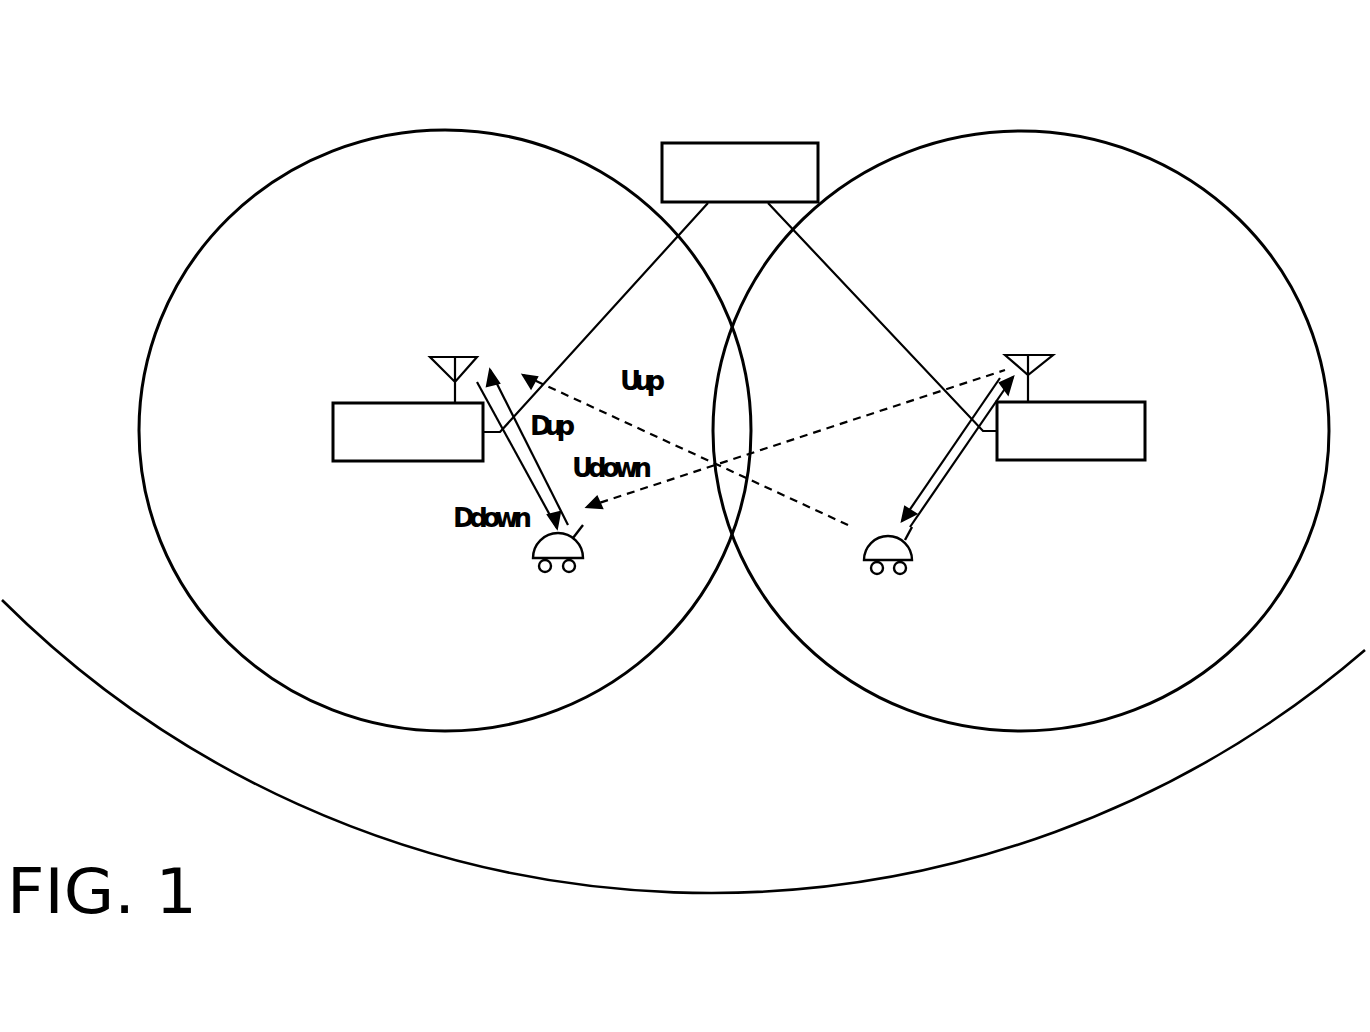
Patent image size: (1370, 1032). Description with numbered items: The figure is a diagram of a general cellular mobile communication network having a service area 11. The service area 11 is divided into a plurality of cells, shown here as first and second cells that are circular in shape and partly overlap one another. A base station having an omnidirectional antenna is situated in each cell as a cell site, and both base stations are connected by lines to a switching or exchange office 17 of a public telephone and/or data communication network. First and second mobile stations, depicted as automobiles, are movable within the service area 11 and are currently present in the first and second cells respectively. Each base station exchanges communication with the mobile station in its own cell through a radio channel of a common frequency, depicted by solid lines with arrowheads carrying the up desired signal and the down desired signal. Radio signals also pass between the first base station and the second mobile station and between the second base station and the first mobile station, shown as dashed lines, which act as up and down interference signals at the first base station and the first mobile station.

The service area 11 is at (422, 814).
The switching office 17 is at (738, 143).